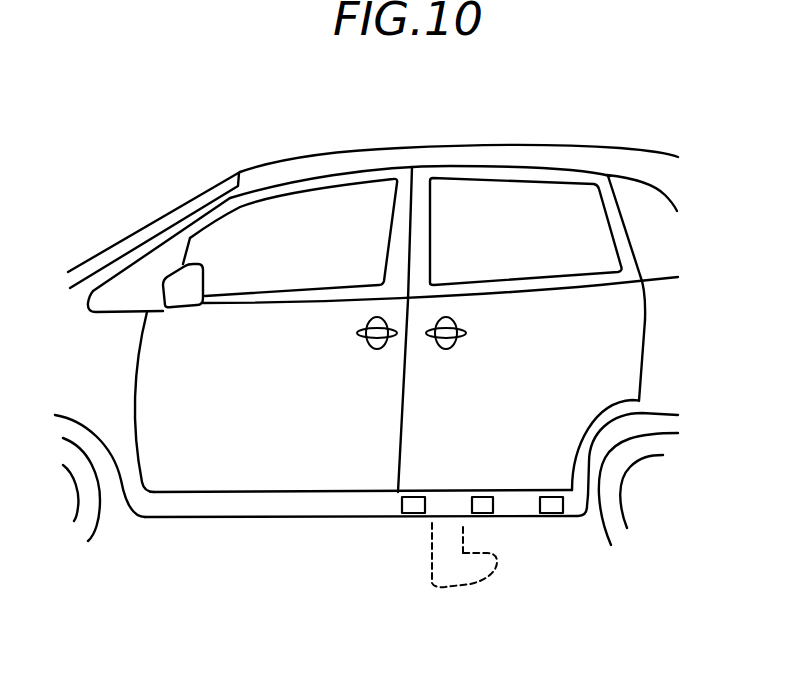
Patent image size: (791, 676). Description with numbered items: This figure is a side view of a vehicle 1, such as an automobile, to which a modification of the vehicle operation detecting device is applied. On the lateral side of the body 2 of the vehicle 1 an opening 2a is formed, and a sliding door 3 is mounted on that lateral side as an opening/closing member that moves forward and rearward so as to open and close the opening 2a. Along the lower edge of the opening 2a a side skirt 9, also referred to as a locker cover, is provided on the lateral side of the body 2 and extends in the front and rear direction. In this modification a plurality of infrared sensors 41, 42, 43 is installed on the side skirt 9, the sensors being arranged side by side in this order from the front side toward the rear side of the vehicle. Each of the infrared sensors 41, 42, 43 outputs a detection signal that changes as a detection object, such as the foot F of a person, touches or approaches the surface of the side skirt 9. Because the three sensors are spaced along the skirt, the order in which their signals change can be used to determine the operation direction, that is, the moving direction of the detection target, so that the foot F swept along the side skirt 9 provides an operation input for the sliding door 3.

The vehicle 1 is at (190, 187).
The body 2 is at (666, 152).
The opening 2a is at (641, 349).
The sliding door 3 is at (640, 384).
The side skirt 9 is at (575, 518).
The infrared sensor 41 is at (413, 497).
The infrared sensor 42 is at (481, 497).
The infrared sensor 43 is at (553, 497).
The foot F is at (428, 532).